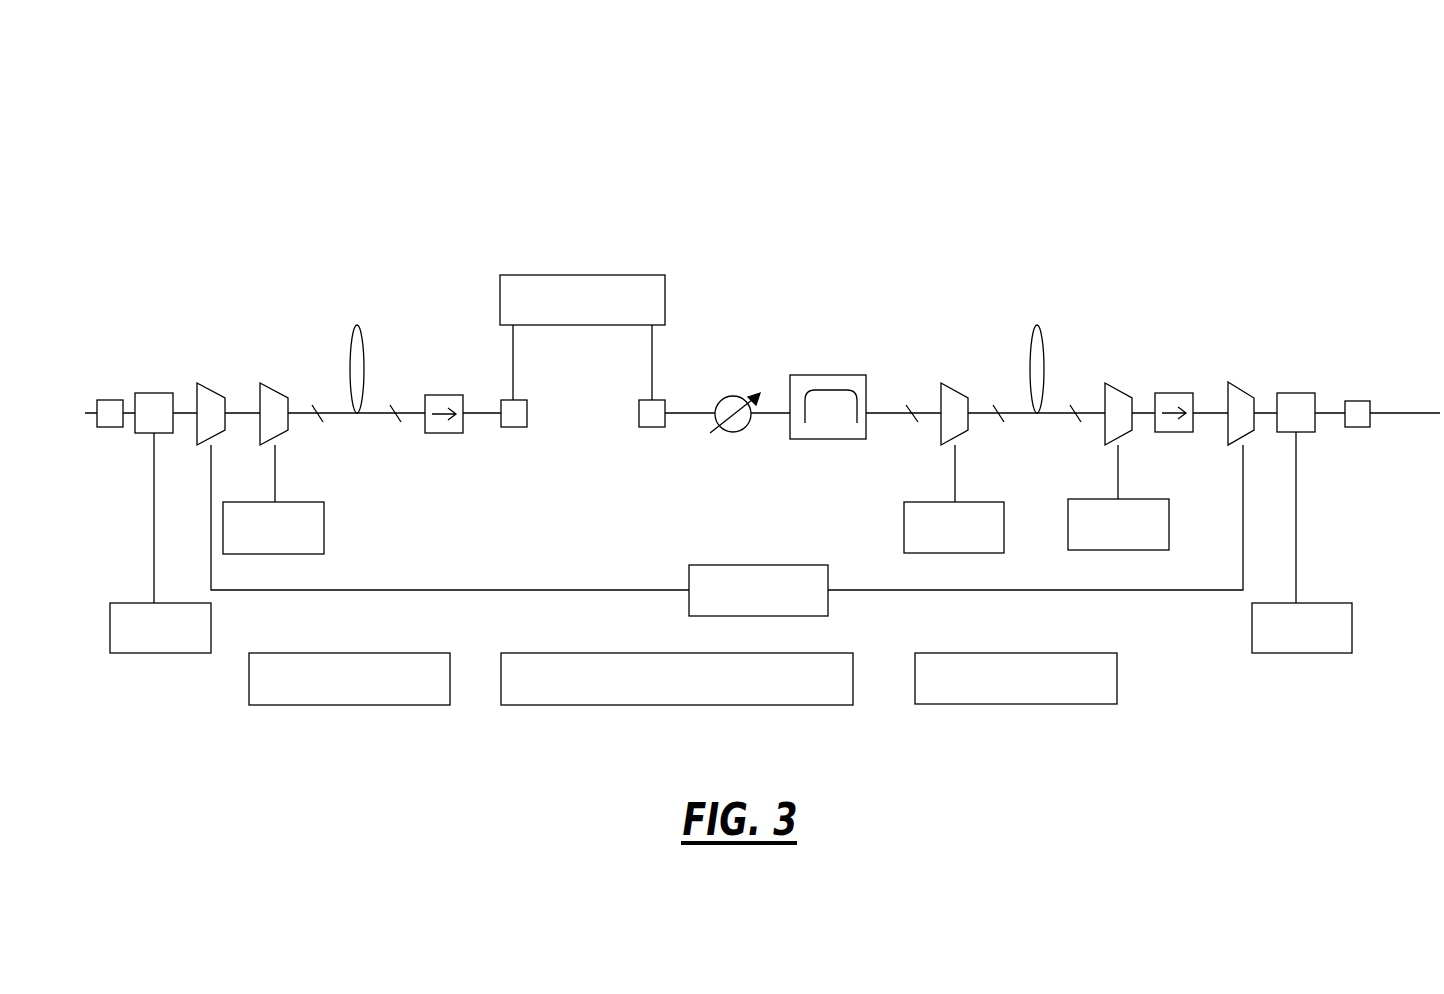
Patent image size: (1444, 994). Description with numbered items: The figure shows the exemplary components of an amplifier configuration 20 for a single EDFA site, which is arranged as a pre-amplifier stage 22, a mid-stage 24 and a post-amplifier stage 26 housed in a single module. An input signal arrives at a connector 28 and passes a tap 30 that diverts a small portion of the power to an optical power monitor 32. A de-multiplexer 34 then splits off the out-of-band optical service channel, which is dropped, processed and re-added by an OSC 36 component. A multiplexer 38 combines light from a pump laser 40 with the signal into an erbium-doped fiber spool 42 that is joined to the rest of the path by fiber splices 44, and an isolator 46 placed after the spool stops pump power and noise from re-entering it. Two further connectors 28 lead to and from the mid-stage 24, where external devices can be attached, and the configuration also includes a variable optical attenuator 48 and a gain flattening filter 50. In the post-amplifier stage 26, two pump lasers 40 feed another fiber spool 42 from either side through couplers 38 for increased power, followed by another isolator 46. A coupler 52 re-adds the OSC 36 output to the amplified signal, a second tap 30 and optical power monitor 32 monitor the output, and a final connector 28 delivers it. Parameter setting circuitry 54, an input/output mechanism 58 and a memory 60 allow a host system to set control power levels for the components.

The amplifier configuration 20 is at (767, 117).
The pre-amplifier stage 22 is at (352, 217).
The mid-stage 24 is at (603, 275).
The post-amplifier stage 26 is at (1082, 222).
The connector 28 is at (110, 400).
The tap 30 is at (154, 393).
The optical power monitor 32 is at (173, 653).
The de-multiplexer 34 is at (213, 383).
The OSC component 36 is at (765, 565).
The multiplexer 38 is at (278, 383).
The pump laser 40 is at (324, 530).
The fiber spool 42 is at (362, 352).
The fiber splice 44 is at (393, 410).
The isolator 46 is at (447, 433).
The variable optical attenuator 48 is at (737, 393).
The gain flattening filter 50 is at (825, 375).
The coupler 52 is at (1243, 382).
The parameter setting circuitry 54 is at (853, 680).
The input/output mechanism 58 is at (1117, 680).
The memory 60 is at (450, 680).